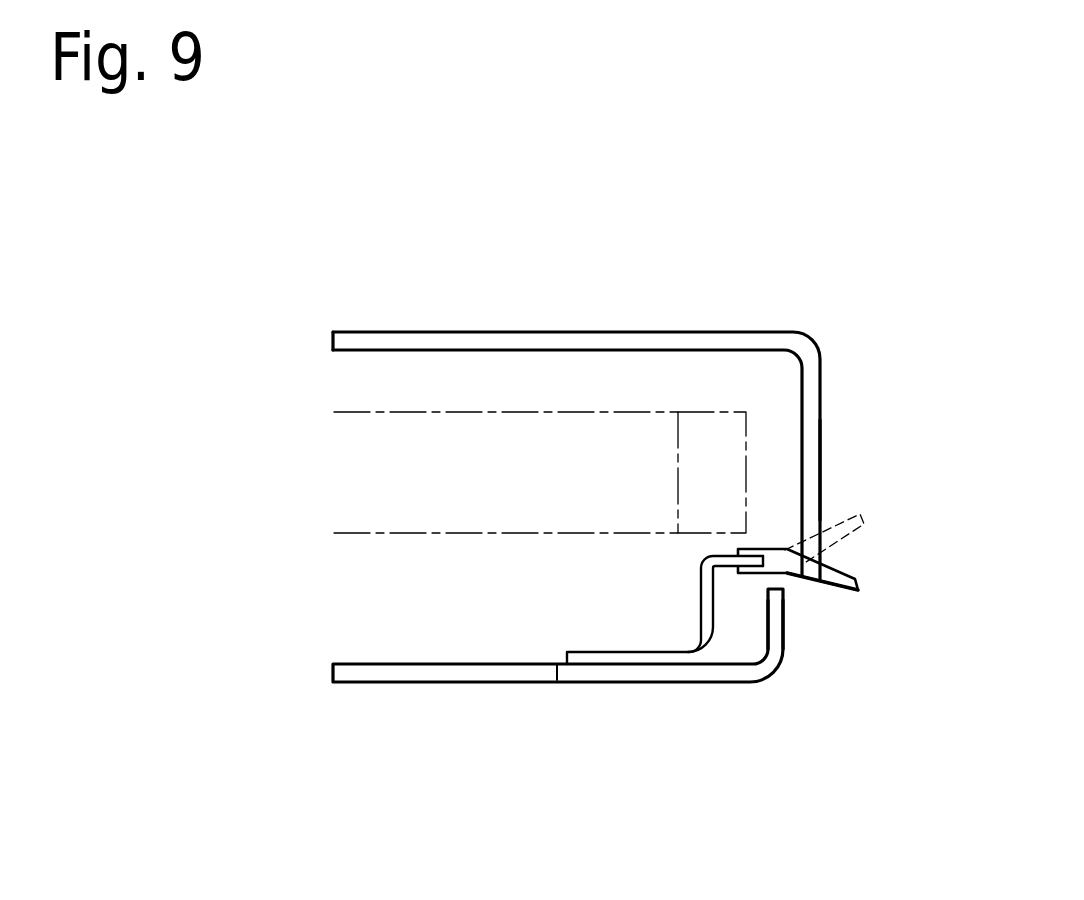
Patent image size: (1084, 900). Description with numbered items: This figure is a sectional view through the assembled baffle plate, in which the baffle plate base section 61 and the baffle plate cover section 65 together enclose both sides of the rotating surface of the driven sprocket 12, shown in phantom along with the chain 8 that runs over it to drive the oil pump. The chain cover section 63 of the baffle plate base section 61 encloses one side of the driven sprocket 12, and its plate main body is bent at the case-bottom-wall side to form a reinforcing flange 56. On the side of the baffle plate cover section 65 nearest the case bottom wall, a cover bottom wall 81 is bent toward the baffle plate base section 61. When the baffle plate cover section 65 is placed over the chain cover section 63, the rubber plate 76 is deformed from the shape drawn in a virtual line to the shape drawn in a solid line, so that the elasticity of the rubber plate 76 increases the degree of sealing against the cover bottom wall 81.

The baffle plate cover section 65 is at (572, 328).
The cover bottom wall 81 is at (821, 405).
The driven sprocket 12 is at (415, 437).
The chain 8 is at (718, 428).
The rubber plate 76 is at (845, 580).
The reinforcing flange 56 is at (777, 633).
The chain cover section 63 is at (468, 684).
The baffle plate base section 61 is at (613, 719).